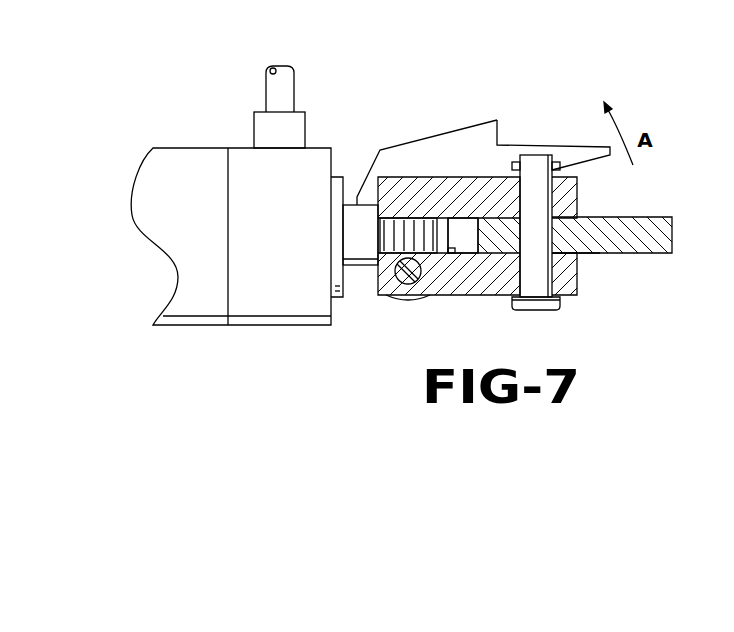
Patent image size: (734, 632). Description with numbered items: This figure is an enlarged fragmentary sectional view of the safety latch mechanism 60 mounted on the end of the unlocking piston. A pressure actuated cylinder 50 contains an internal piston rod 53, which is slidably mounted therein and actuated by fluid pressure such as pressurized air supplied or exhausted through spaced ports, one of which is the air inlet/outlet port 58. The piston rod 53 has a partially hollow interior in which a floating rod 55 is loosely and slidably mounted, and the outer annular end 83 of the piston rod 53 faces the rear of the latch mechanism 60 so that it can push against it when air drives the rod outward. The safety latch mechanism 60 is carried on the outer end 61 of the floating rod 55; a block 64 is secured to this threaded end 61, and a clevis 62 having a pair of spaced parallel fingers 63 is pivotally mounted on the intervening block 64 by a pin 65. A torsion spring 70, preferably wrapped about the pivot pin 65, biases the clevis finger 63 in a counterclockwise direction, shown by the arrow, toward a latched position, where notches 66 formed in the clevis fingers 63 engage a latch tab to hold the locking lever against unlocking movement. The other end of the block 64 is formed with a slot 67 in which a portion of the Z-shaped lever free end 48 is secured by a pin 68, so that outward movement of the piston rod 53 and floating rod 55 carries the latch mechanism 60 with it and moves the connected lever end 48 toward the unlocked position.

The free end of lever 48 is at (652, 225).
The pressure actuated cylinder 50 is at (191, 145).
The internal rod 53 is at (338, 192).
The floating rod 55 is at (358, 235).
The air inlet/outlet port 58 is at (266, 90).
The safety latch mechanism 60 is at (547, 132).
The outer end of floating rod 61 is at (410, 225).
The clevis 62 is at (434, 132).
The clevis finger 63 is at (473, 137).
The block 64 is at (572, 193).
The pin 65 is at (408, 276).
The notch 66 is at (503, 134).
The slot 67 is at (572, 242).
The pin 68 is at (535, 288).
The torsion spring 70 is at (453, 254).
The outer annular end of piston rod 83 is at (345, 279).